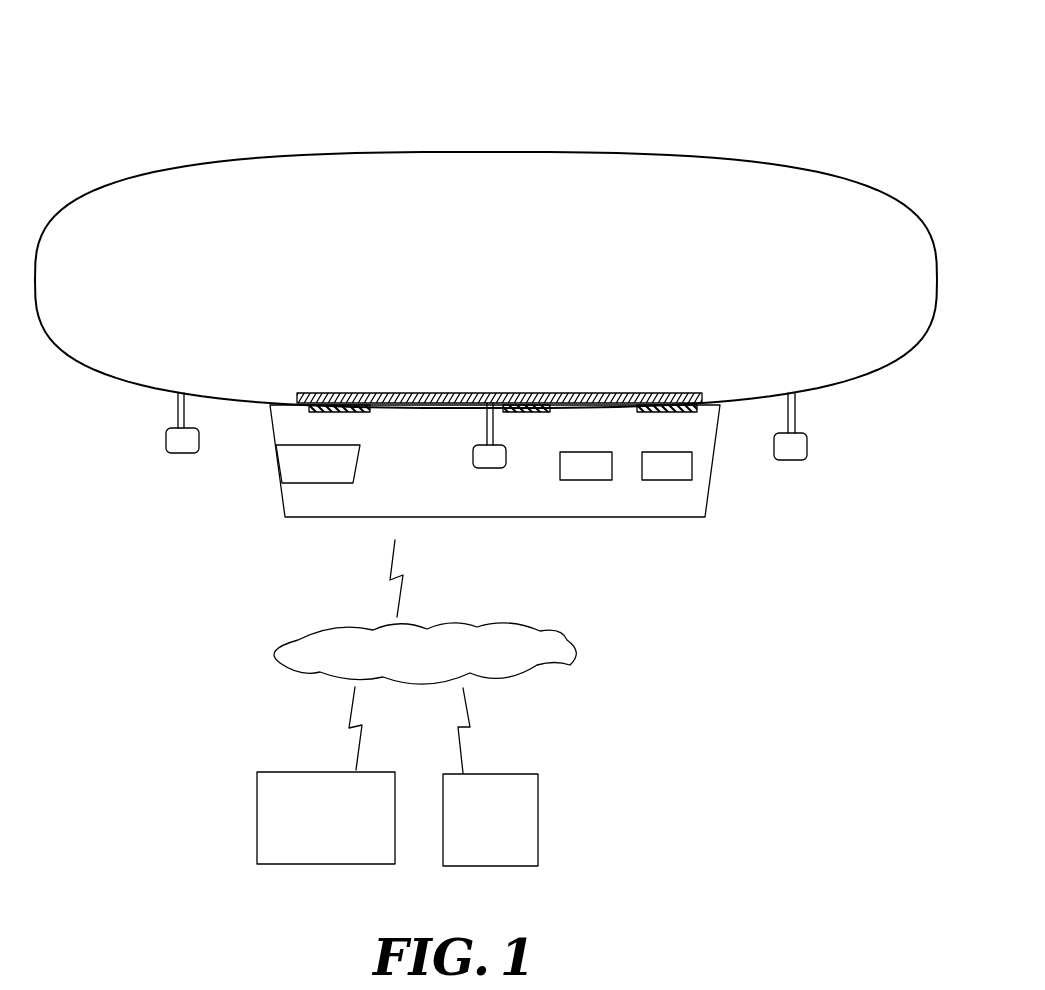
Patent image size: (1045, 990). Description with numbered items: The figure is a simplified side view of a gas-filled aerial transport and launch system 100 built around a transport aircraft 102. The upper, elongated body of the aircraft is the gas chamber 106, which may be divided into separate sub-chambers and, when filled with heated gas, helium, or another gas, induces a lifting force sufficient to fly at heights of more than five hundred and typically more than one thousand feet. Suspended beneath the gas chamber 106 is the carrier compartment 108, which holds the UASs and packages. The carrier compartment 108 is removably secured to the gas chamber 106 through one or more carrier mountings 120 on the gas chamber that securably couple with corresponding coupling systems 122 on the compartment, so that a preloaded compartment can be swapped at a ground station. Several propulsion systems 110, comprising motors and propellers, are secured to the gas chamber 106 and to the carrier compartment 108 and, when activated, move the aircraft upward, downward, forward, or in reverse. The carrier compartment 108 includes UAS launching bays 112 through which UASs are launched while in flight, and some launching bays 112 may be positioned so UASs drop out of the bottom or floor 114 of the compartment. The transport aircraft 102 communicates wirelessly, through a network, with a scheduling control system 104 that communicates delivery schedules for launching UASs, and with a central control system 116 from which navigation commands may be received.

The gas-filled aerial transport and launch system 100 is at (811, 79).
The transport aircraft 102 is at (580, 140).
The scheduling control system 104 is at (256, 840).
The gas chamber 106 is at (372, 170).
The carrier compartment 108 is at (323, 518).
The propulsion system 110 is at (170, 445).
The UAS launching bay 112 is at (655, 478).
The bottom or floor 114 is at (513, 520).
The central control system 116 is at (539, 839).
The carrier mounting 120 is at (416, 393).
The coupling system 122 is at (357, 411).